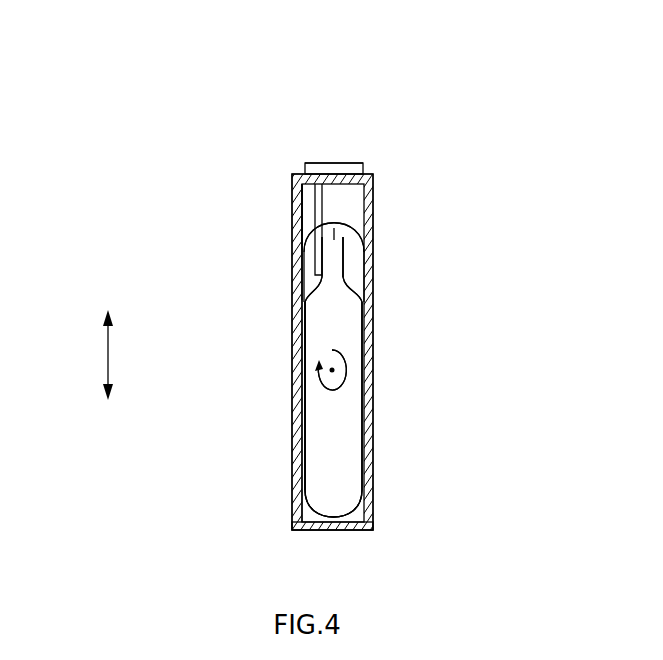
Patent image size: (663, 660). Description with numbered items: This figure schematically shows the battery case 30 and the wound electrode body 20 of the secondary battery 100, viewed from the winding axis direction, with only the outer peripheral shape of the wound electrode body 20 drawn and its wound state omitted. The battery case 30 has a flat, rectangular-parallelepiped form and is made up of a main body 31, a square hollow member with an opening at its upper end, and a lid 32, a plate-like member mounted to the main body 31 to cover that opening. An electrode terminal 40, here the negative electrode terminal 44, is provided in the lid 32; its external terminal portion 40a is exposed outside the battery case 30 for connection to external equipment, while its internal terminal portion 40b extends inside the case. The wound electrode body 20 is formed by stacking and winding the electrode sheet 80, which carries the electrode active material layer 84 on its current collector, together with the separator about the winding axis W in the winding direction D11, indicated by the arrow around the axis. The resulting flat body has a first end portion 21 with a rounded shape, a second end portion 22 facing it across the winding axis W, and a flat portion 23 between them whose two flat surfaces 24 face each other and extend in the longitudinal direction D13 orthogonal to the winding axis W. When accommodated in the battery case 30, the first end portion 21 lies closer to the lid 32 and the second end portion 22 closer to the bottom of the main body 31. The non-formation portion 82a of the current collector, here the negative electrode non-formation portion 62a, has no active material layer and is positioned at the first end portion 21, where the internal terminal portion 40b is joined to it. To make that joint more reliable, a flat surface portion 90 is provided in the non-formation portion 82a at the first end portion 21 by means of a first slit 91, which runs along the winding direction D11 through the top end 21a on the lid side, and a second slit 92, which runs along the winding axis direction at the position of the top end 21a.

The secondary battery 100 is at (409, 100).
The battery case 30 is at (368, 460).
The main body 31 is at (371, 495).
The electrode sheet 80 is at (307, 215).
The electrode active material layer 84 is at (301, 229).
The electrode terminal 40 is at (333, 121).
The negative electrode terminal 44 is at (313, 157).
The external terminal portion 40a is at (338, 161).
The internal terminal portion 40b is at (298, 213).
The lid 32 is at (300, 183).
The wound electrode body 20 is at (354, 212).
The first end portion 21 is at (358, 223).
The top end 21a is at (333, 215).
The second end portion 22 is at (353, 516).
The flat portion 23 is at (298, 401).
The flat surface 24 is at (298, 353).
The flat surface portion 90 is at (317, 276).
The first slit 91 is at (304, 292).
The second slit 92 is at (364, 234).
The negative electrode non-formation portion 62a is at (427, 262).
The non-formation portion 82a is at (349, 280).
The winding axis W is at (333, 370).
The winding direction D11 is at (347, 371).
The longitudinal direction D13 is at (86, 355).